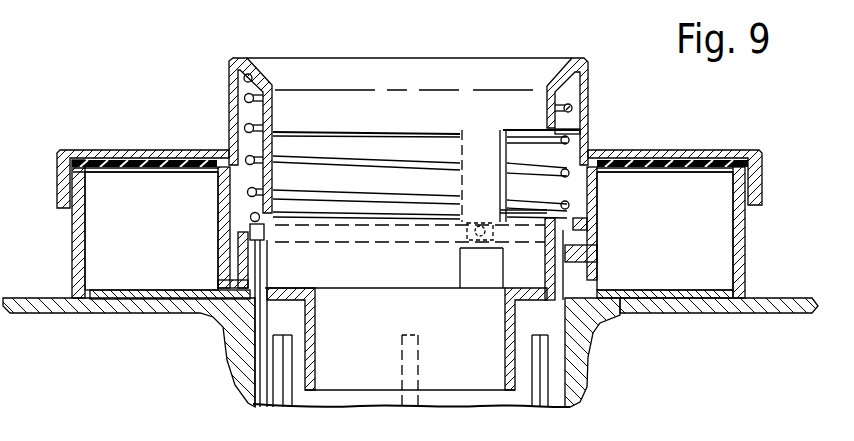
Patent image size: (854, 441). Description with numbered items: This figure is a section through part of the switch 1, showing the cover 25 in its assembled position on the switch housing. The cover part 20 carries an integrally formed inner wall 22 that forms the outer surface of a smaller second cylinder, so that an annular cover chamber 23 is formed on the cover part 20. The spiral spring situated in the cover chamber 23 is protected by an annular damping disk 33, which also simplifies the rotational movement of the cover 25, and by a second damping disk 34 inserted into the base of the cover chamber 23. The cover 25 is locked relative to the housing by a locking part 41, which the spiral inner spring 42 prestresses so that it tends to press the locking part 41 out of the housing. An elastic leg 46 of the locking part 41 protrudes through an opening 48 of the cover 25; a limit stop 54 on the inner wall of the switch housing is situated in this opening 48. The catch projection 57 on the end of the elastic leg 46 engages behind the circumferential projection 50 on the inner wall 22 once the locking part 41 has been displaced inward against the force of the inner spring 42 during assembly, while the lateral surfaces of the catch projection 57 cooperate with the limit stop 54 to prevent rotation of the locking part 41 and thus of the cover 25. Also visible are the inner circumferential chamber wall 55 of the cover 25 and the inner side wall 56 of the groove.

The switch 1 is at (627, 357).
The cover part 20 is at (693, 307).
The inner wall 22 is at (567, 272).
The cover chamber 23 is at (150, 244).
The cover 25 is at (98, 153).
The damping disk 33 is at (125, 160).
The second damping disk 34 is at (112, 299).
The locking part 41 is at (264, 62).
The inner spring 42 is at (570, 108).
The elastic leg 46 is at (482, 168).
The opening 48 is at (463, 268).
The circumferential projection 50 is at (558, 229).
The limit stop 54 is at (255, 325).
The inner circumferential chamber wall 55 is at (598, 192).
The inner side wall 56 is at (550, 268).
The catch projection 57 is at (482, 232).